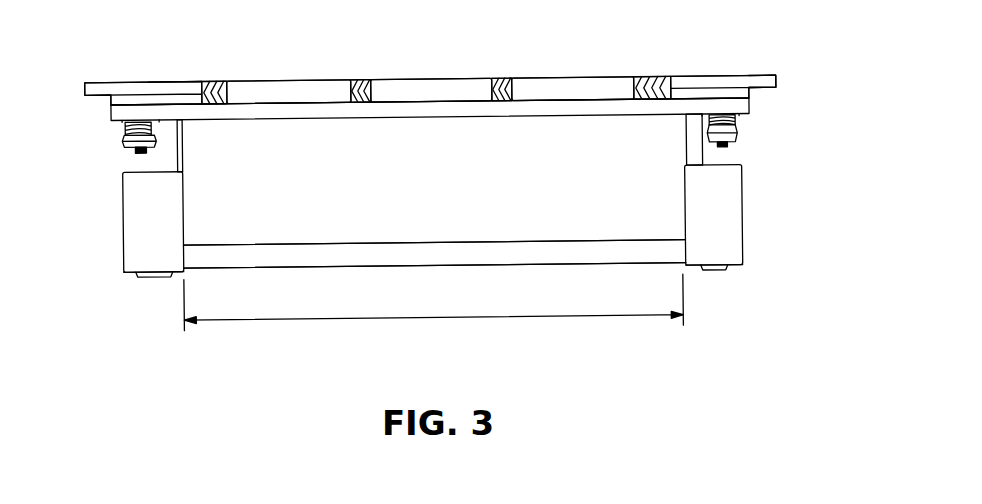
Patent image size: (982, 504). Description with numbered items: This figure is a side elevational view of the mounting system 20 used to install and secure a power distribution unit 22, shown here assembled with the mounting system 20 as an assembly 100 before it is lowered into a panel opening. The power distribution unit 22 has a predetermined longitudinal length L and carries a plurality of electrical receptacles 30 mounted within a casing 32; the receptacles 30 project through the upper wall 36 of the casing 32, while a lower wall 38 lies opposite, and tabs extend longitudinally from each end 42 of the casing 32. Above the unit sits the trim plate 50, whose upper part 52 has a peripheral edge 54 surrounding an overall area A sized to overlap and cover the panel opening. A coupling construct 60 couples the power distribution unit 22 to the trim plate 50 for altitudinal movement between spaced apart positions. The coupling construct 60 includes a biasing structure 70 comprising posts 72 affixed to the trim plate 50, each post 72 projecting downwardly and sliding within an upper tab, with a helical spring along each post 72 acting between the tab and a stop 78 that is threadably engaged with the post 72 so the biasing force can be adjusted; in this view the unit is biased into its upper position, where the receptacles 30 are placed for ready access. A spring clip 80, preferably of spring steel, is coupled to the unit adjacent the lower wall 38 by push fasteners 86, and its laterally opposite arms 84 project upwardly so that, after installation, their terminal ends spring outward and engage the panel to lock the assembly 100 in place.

The mounting system 20 is at (357, 68).
The power distribution unit 22 is at (356, 274).
The electrical receptacles 30 is at (263, 90).
The casing 32 is at (445, 232).
The upper wall 36 is at (405, 113).
The lower wall 38 is at (518, 254).
The end of casing 42 is at (178, 153).
The trim plate 50 is at (150, 76).
The upper part of trim plate 52 is at (668, 78).
The peripheral edge 54 is at (757, 76).
The coupling construct 60 is at (114, 145).
The biasing structure 70 is at (150, 127).
The post 72 is at (136, 150).
The stop 78 is at (155, 142).
The spring clip 80 is at (116, 274).
The arms 84 is at (143, 220).
The push fasteners 86 is at (155, 278).
The assembly 100 is at (506, 74).
The overall area A is at (180, 82).
The longitudinal length L is at (442, 318).